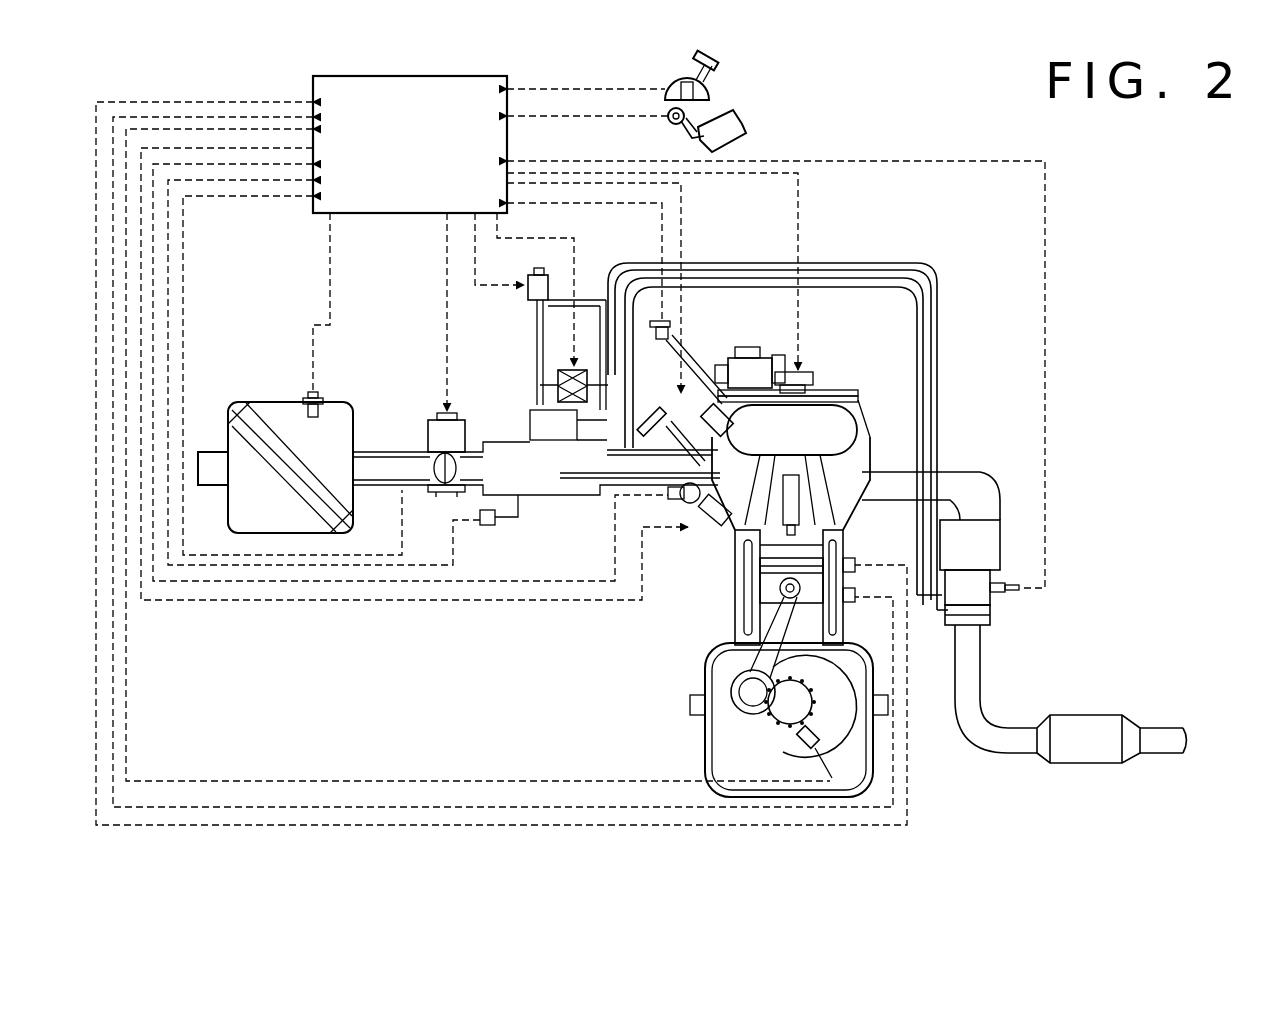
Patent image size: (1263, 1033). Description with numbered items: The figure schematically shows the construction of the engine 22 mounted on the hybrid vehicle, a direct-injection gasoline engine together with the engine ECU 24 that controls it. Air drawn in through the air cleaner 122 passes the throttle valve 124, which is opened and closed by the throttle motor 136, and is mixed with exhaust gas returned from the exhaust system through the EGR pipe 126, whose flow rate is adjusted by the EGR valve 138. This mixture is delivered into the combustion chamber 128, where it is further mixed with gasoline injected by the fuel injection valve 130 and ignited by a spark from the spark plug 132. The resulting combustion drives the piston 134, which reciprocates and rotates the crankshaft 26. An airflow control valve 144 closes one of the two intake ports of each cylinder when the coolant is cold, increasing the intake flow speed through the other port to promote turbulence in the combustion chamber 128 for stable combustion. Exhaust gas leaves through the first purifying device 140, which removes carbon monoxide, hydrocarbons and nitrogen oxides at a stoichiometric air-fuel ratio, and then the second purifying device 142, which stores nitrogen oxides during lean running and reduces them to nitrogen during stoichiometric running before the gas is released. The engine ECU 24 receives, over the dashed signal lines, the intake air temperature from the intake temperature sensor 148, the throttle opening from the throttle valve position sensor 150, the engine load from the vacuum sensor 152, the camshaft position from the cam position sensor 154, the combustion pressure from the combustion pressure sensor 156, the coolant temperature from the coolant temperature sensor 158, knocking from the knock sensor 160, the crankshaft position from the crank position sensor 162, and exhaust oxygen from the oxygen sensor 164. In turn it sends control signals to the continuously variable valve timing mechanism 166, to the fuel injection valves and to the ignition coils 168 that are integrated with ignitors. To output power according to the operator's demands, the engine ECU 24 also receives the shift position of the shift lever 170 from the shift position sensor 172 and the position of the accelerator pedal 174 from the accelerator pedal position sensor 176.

The engine 22 is at (1080, 304).
The engine ECU 24 is at (410, 76).
The crankshaft 26 is at (752, 737).
The air cleaner 122 is at (242, 408).
The throttle valve 124 is at (440, 462).
The EGR pipe 126 is at (845, 263).
The combustion chamber 128 is at (800, 548).
The fuel injection valve 130 is at (738, 524).
The spark plug 132 is at (860, 490).
The piston 134 is at (773, 558).
The throttle motor 136 is at (460, 430).
The EGR valve 138 is at (552, 378).
The first purifying device 140 is at (985, 520).
The second purifying device 142 is at (1086, 715).
The airflow control valve 144 is at (706, 396).
The intake temperature sensor 148 is at (322, 398).
The throttle valve position sensor 150 is at (442, 492).
The vacuum sensor 152 is at (492, 526).
The cam position sensor 154 is at (668, 330).
The combustion pressure sensor 156 is at (662, 492).
The coolant temperature sensor 158 is at (855, 565).
The knock sensor 160 is at (856, 600).
The crank position sensor 162 is at (805, 748).
The oxygen sensor 164 is at (1020, 595).
The continuously variable valve timing mechanism 166 is at (832, 410).
The ignition coils 168 is at (801, 372).
The shift lever 170 is at (714, 60).
The shift position sensor 172 is at (668, 84).
The accelerator pedal 174 is at (733, 116).
The accelerator pedal position sensor 176 is at (667, 118).